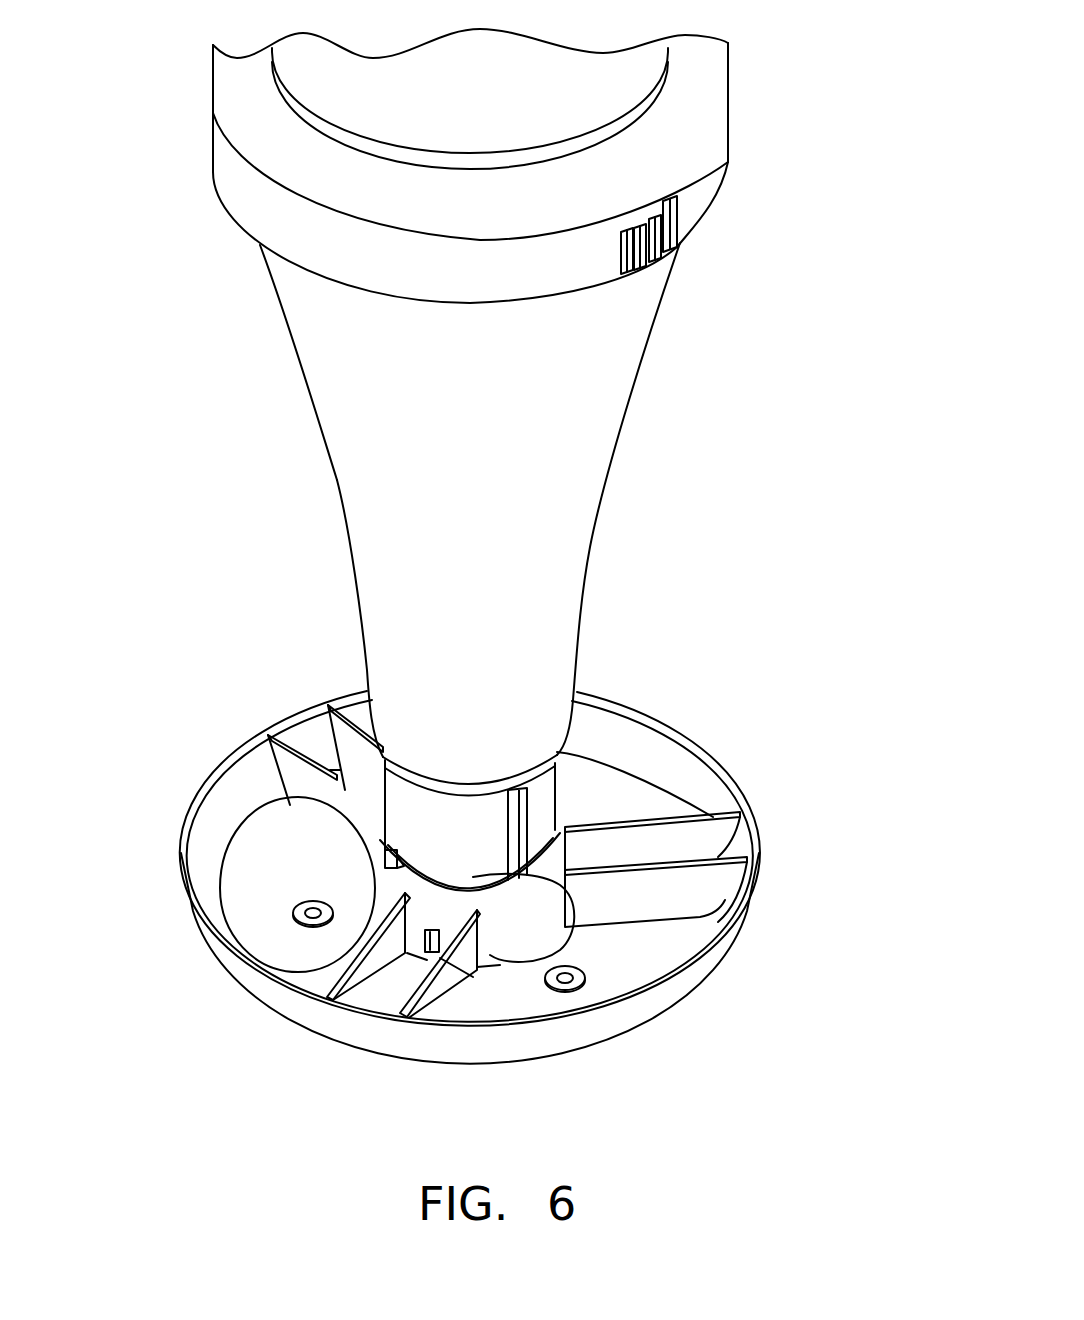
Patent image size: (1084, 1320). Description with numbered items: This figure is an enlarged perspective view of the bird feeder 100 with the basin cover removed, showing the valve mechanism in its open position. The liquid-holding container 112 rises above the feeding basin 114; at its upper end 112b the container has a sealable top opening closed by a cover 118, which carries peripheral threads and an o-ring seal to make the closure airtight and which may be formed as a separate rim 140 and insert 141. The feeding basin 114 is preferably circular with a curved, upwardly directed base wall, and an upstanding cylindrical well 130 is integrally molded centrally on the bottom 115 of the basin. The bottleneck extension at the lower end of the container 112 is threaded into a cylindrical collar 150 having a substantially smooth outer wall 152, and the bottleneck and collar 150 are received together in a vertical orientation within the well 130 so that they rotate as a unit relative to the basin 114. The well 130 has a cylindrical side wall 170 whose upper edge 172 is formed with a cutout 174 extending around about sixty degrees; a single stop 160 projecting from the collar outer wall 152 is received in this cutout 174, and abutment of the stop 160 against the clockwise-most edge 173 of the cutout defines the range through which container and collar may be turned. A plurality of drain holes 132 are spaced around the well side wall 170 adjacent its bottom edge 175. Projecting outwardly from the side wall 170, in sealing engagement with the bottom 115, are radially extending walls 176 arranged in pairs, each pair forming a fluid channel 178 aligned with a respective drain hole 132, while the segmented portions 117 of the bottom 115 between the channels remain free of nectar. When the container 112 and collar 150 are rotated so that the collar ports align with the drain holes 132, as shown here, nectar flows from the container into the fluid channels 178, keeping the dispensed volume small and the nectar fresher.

The bird feeder 100 is at (828, 268).
The liquid-holding container 112 is at (367, 467).
The upper end of the container 112b is at (295, 298).
The feeding basin 114 is at (681, 778).
The bottom of the feeding basin 115 is at (303, 863).
The segmented portions of the bottom 117 is at (597, 790).
The cover 118 is at (244, 166).
The cylindrical well 130 is at (503, 947).
The drain holes 132 is at (432, 928).
The rim 140 is at (675, 165).
The insert 141 is at (628, 78).
The cylindrical collar 150 is at (400, 795).
The outer wall of the collar 152 is at (440, 835).
The stop 160 is at (597, 905).
The side wall of the well 170 is at (548, 930).
The upper edge of the well side wall 172 is at (522, 805).
The clockwise-most edge of the cutout 173 is at (390, 858).
The cutout 174 is at (268, 972).
The bottom edge of the well side wall 175 is at (497, 965).
The radially extending walls 176 is at (712, 815).
The fluid channels 178 is at (318, 745).